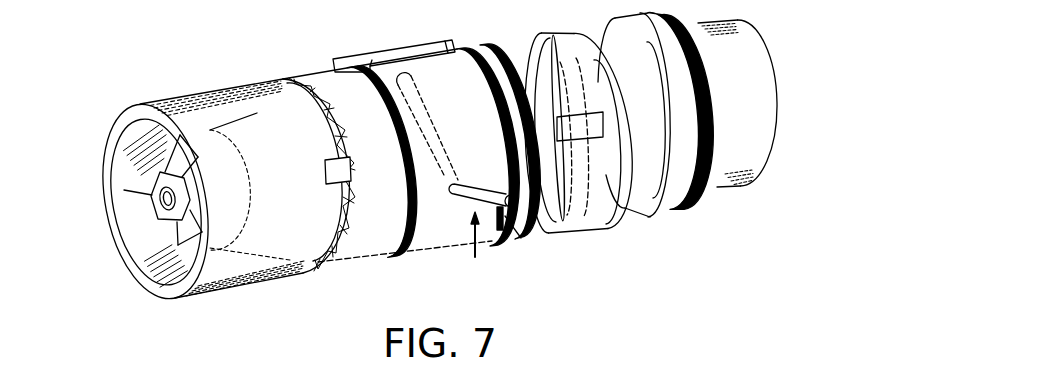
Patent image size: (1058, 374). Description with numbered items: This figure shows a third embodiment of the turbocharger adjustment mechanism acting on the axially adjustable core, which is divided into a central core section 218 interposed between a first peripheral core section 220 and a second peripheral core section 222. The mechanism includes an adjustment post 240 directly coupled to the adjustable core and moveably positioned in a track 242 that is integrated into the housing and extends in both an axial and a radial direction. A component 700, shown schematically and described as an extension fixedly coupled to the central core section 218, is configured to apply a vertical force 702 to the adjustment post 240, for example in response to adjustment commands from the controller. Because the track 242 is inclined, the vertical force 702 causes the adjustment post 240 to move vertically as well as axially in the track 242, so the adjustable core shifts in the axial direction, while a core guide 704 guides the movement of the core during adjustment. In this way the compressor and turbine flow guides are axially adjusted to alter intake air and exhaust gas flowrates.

The central core section 218 is at (553, 262).
The first peripheral core section 220 is at (160, 310).
The second peripheral core section 222 is at (548, 250).
The adjustment post 240 is at (452, 187).
The track 242 is at (447, 157).
The component 700 is at (504, 229).
The vertical force 702 is at (466, 232).
The core guide 704 is at (401, 44).